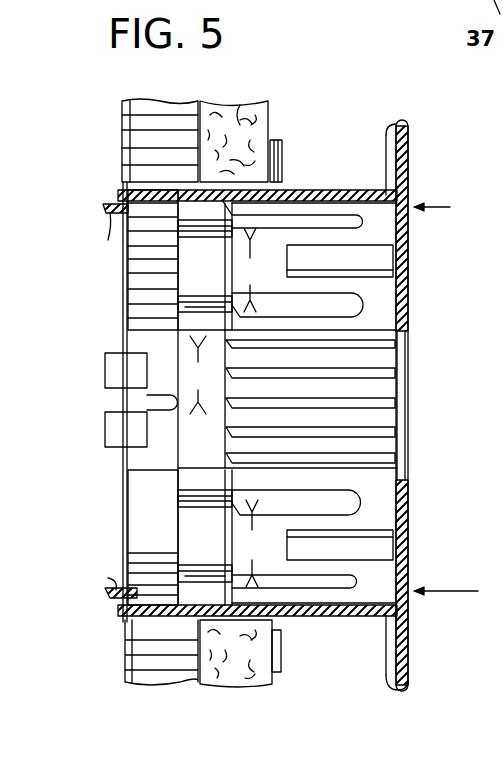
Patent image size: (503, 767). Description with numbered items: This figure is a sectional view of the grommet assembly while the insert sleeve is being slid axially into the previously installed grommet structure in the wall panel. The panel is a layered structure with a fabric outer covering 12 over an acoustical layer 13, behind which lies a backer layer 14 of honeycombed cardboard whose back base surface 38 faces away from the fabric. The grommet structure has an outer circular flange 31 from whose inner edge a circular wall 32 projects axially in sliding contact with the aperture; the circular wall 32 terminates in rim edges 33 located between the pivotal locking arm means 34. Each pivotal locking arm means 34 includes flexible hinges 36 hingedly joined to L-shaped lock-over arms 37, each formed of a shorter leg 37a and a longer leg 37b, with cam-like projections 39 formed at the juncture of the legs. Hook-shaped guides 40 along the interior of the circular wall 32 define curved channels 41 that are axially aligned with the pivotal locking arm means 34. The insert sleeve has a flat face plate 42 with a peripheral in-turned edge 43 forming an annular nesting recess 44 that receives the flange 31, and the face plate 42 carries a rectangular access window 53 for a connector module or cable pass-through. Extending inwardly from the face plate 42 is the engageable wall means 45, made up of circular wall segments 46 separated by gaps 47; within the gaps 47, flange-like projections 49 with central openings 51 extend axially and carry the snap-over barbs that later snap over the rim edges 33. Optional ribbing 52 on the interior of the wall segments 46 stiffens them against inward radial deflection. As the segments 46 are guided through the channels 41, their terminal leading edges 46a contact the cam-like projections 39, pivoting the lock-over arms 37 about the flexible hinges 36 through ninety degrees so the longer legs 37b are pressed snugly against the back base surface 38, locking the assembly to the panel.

The fabric outer covering 12 is at (270, 125).
The acoustical layer 13 is at (245, 110).
The backer layer 14 is at (150, 118).
The outer circular flange 31 is at (283, 164).
The circular wall 32 is at (182, 590).
The rim edges 33 is at (170, 540).
The pivotal locking arm means 34 is at (82, 415).
The flexible hinges 36 is at (150, 340).
The lock-over arms 37 is at (112, 355).
The shorter leg 37a is at (123, 205).
The longer leg 37b is at (108, 578).
The back base surface 38 is at (122, 137).
The cam-like projections 39 is at (150, 190).
The hook-shaped guides 40 is at (200, 296).
The curved channels 41 is at (198, 375).
The face plate 42 is at (409, 164).
The in-turned edge 43 is at (388, 124).
The annular nesting recess 44 is at (385, 135).
The engageable wall means 45 is at (330, 181).
The circular wall segments 46 is at (320, 617).
The terminal leading edges 46a is at (225, 422).
The gaps 47 is at (253, 407).
The flange-like projections 49 is at (325, 500).
The central openings 51 is at (344, 263).
The ribbing 52 is at (398, 315).
The access window 53 is at (400, 370).